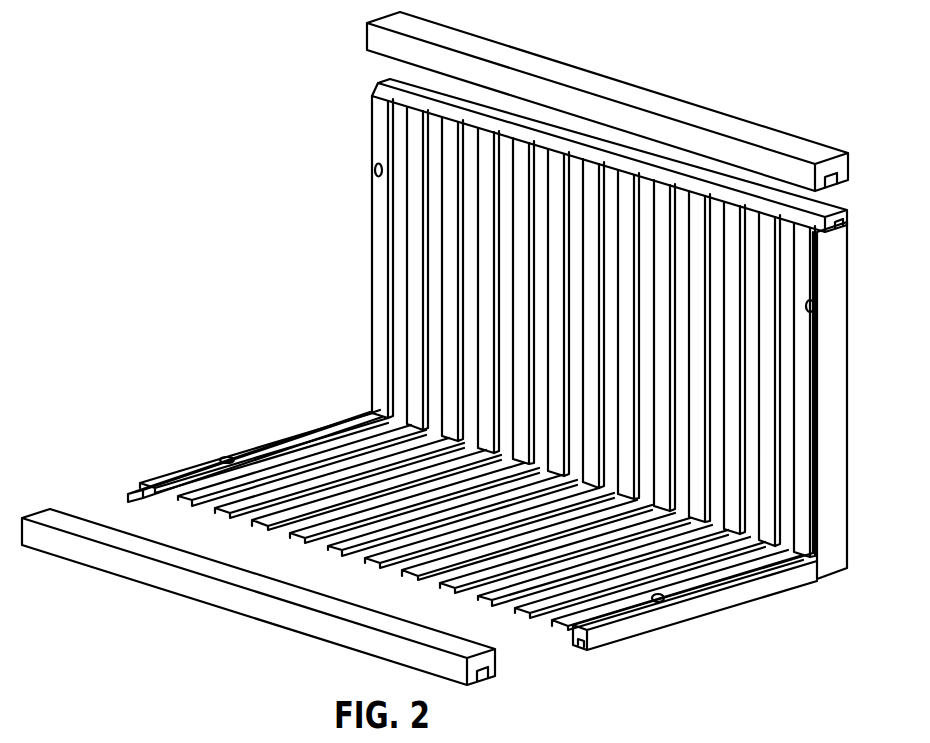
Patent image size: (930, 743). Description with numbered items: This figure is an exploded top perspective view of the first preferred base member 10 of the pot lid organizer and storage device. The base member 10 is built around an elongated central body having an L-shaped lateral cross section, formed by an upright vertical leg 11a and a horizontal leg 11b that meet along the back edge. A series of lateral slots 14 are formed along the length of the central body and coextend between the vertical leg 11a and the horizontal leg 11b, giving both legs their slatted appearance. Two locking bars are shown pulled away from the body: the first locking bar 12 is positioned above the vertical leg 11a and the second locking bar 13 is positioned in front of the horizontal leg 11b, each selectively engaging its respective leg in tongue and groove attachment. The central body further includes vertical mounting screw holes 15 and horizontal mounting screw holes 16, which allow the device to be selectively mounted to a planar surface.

The first preferred base member 10 is at (367, 269).
The vertical leg 11a is at (837, 560).
The horizontal leg 11b is at (730, 603).
The first locking bar 12 is at (660, 107).
The second locking bar 13 is at (497, 683).
The lateral slots 14 is at (467, 119).
The vertical mounting screw holes 15 is at (375, 170).
The horizontal mounting screw holes 16 is at (220, 458).